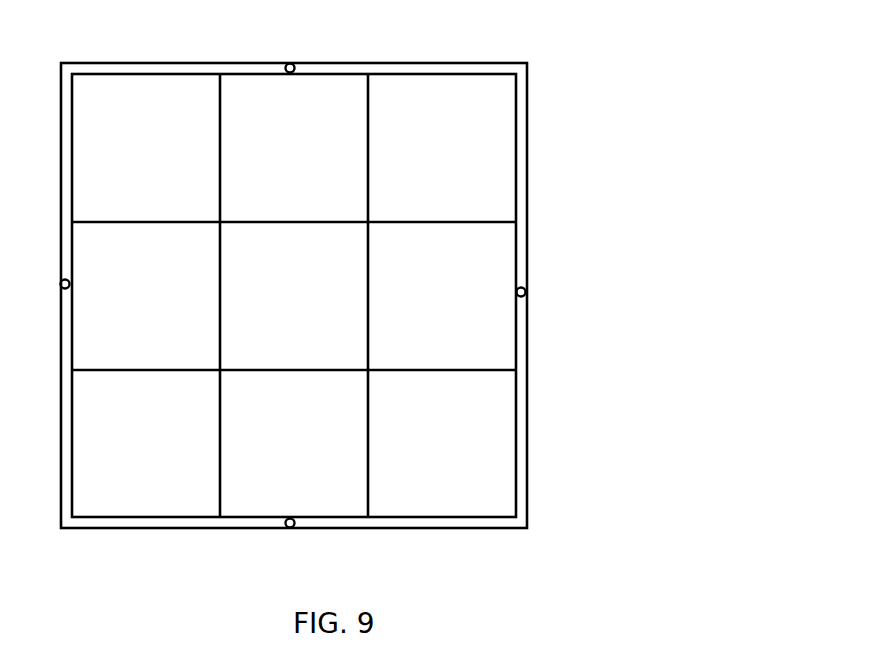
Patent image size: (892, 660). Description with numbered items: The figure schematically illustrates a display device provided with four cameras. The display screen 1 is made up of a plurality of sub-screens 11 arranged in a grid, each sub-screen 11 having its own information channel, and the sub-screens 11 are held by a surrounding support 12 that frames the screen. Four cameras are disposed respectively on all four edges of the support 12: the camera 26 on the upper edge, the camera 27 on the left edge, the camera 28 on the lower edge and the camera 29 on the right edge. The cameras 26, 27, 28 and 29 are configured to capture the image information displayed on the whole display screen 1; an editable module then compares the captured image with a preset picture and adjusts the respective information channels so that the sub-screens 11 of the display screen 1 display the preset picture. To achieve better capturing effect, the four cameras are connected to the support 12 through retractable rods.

The display screen 1 is at (332, 295).
The sub-screen 11 is at (492, 338).
The support 12 is at (527, 250).
The camera 26 is at (294, 72).
The camera 27 is at (70, 286).
The camera 28 is at (286, 518).
The camera 29 is at (516, 291).